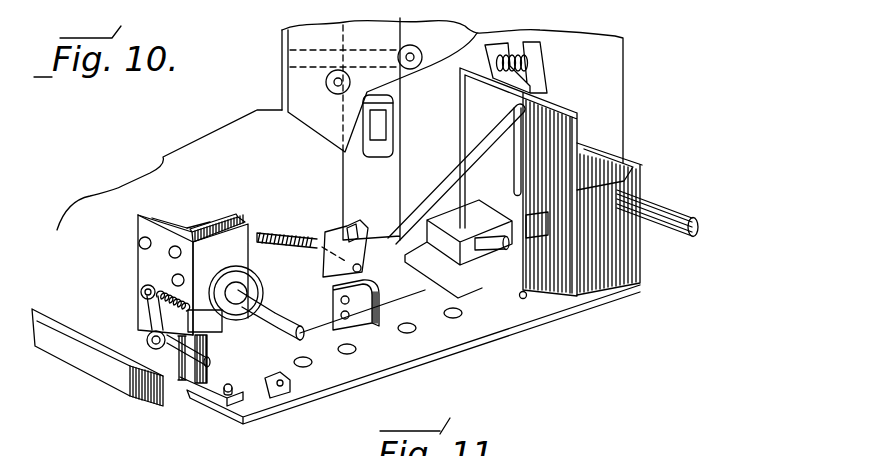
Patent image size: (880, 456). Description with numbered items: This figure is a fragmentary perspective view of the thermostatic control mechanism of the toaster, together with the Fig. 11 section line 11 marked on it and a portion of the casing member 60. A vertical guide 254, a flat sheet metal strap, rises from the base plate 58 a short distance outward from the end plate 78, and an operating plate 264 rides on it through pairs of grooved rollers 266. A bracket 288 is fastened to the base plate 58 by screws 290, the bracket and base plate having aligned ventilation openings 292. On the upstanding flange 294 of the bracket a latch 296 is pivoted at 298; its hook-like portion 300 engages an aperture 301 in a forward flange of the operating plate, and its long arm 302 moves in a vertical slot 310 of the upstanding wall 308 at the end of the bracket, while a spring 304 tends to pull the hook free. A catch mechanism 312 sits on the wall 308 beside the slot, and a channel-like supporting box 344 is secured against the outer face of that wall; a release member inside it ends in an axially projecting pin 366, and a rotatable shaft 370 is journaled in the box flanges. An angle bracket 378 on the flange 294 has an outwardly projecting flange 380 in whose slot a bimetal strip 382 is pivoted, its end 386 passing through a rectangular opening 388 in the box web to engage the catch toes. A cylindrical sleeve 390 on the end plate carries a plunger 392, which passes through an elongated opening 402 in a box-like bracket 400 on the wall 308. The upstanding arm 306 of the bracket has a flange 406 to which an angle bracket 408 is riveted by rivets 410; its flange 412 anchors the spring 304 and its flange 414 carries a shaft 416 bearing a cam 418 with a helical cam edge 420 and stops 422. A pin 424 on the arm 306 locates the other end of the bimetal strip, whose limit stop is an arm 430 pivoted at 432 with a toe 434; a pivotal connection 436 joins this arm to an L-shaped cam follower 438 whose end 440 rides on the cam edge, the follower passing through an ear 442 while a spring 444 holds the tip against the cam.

The section line 11- 11 is at (682, 132).
The base plate 58 is at (453, 355).
The side bar 60 is at (53, 338).
The end plate 78 is at (123, 200).
The vertical guide 254 is at (360, 163).
The operating plate 264 is at (282, 42).
The rollers 266 is at (282, 66).
The bracket 288 is at (510, 303).
The screws 290 is at (222, 397).
The openings 292 is at (347, 352).
The upstanding flange 294 is at (327, 245).
The latch 296 is at (422, 191).
The pivot 298 is at (352, 230).
The hook-like portion 300 is at (352, 235).
The aperture 301 is at (375, 127).
The long arm 302 is at (482, 150).
The spring 304 is at (288, 232).
The upstanding arm 306 is at (150, 400).
The upstanding wall 308 is at (553, 125).
The vertical slot 310 is at (545, 160).
The catch mechanism 312 is at (558, 73).
The supporting box 344 is at (737, 284).
The pin 366 is at (528, 220).
The shaft 370 is at (678, 215).
The angle bracket 378 is at (357, 317).
The outwardly projecting flange 380 is at (410, 307).
The bimetal strip 382 is at (307, 365).
The end of bimetal strip 386 is at (540, 250).
The rectangular opening 388 is at (620, 203).
The cylindrical sleeve 390 is at (440, 207).
The plunger 392 is at (493, 255).
The box-like bracket 400 is at (480, 217).
The elongated opening 402 is at (476, 258).
The flange 406 is at (187, 226).
The angle bracket 408 is at (202, 228).
The rivets 410 is at (190, 240).
The flange 412 is at (152, 215).
The flange 414 is at (280, 236).
The shaft 416 is at (280, 312).
The cam 418 is at (230, 240).
The helical cam edge 420 is at (230, 392).
The stops 422 is at (292, 282).
The pin 424 is at (70, 380).
The arm 430 is at (170, 253).
The pivot 432 is at (140, 241).
The toe 434 is at (150, 318).
The pivotal connection 436 is at (147, 293).
The cam follower 438 is at (152, 348).
The end of cam follower 440 is at (245, 312).
The ear 442 is at (167, 363).
The spring 444 is at (127, 302).